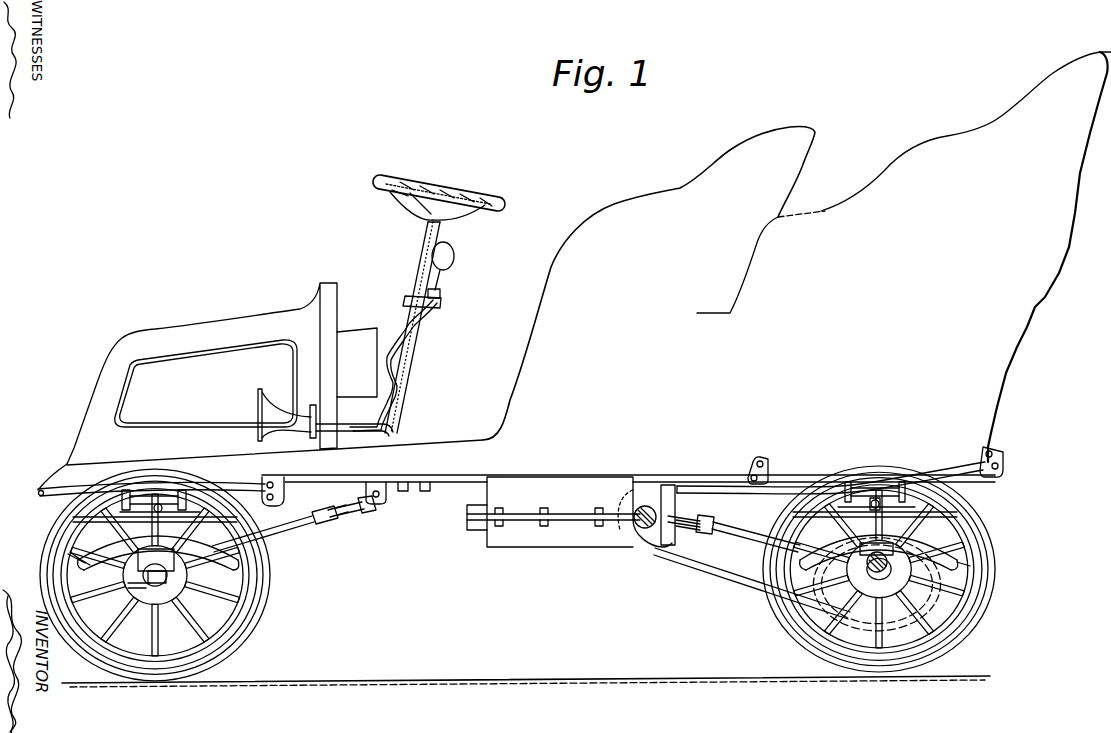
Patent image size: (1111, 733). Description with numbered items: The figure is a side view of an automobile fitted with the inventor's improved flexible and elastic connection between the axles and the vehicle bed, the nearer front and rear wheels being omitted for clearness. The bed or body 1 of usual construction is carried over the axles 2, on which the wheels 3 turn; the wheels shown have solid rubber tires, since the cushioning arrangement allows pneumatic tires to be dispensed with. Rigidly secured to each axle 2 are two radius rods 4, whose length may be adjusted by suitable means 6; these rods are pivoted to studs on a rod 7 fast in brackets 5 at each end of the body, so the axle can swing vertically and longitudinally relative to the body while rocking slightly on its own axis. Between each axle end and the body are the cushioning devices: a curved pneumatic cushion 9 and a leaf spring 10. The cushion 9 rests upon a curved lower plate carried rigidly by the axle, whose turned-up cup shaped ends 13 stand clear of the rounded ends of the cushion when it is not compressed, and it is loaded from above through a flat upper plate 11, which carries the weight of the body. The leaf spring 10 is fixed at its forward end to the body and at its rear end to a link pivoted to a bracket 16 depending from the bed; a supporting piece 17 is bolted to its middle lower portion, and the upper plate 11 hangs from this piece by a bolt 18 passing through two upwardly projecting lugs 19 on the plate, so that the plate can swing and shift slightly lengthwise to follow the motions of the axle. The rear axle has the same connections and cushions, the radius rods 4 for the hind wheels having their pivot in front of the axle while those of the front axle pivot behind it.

The bed or body 1 is at (447, 477).
The axle 2 is at (175, 576).
The wheel 3 is at (272, 605).
The radius rod 4 is at (300, 522).
The bracket 5 is at (412, 491).
The means for adjusting the length of the radius rods 6 is at (333, 512).
The rod 7 is at (376, 504).
The pneumatic cushion 9 is at (95, 550).
The leaf spring 10 is at (238, 478).
The upper plate 11 is at (77, 530).
The cup shaped end 13 is at (790, 598).
The bracket 16 is at (284, 489).
The supporting piece 17 is at (135, 495).
The bolt 18 is at (875, 497).
The upwardly projecting lug 19 is at (162, 506).